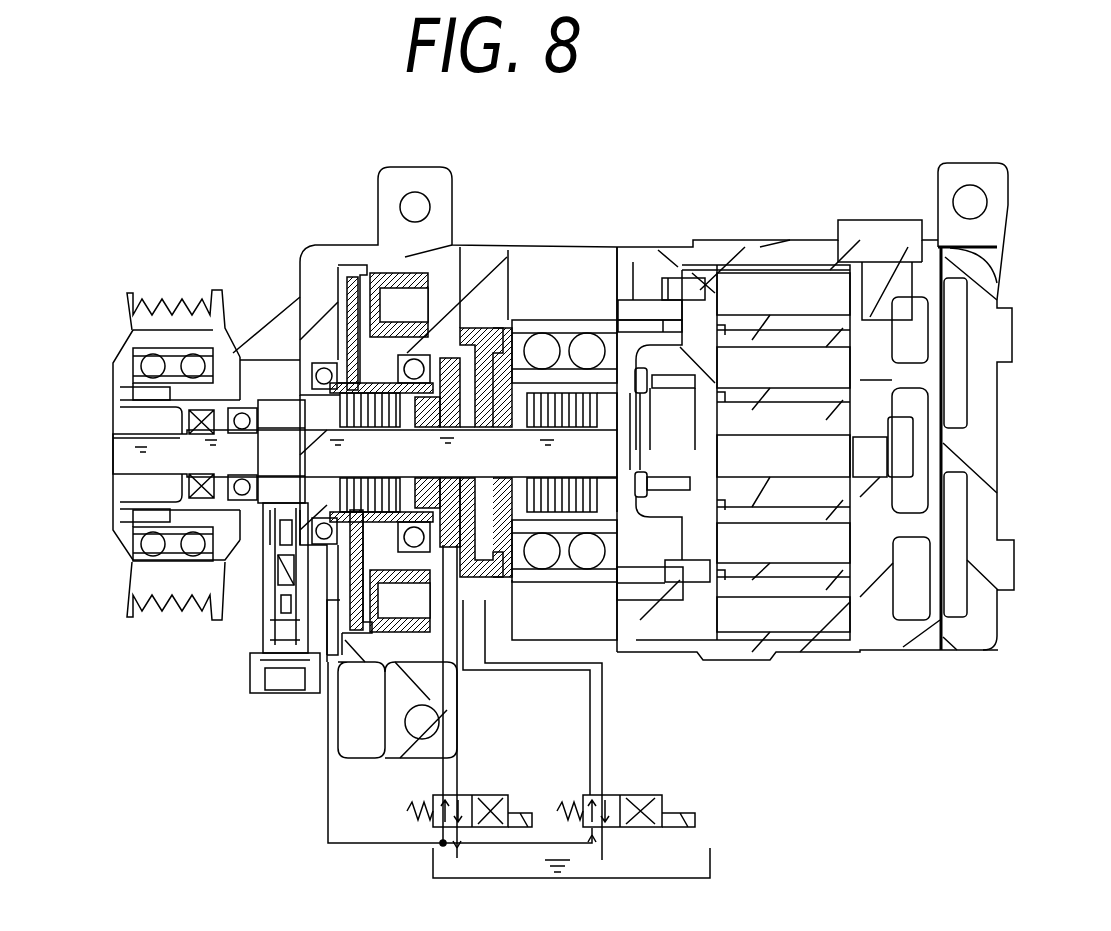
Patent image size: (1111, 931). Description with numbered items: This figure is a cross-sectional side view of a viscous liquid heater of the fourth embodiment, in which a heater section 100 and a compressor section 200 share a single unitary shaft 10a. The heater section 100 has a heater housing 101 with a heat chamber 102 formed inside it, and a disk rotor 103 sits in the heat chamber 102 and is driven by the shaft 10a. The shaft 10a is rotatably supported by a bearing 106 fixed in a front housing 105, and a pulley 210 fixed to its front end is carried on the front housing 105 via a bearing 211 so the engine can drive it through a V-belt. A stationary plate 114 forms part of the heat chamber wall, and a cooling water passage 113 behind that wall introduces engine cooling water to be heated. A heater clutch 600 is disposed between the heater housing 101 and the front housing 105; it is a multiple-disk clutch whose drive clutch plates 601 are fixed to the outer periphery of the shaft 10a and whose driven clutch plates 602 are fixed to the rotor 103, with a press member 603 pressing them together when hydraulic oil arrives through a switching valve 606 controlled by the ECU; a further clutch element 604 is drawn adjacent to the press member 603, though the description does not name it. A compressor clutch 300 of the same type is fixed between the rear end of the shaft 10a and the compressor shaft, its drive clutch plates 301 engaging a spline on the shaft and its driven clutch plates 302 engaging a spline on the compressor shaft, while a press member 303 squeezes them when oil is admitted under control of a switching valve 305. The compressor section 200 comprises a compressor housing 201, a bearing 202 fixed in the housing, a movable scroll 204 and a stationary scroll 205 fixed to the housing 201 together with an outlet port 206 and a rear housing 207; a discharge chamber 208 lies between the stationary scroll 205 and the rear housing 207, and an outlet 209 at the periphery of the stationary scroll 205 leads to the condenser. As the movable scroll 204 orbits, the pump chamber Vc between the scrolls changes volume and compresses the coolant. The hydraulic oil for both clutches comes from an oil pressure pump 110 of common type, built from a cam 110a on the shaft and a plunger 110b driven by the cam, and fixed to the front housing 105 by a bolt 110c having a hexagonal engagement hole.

The unitary shaft 10a is at (122, 456).
The front housing 105 is at (133, 323).
The pulley 210 is at (172, 347).
The bearing 211 is at (130, 554).
The bearing 106 is at (218, 562).
The drive clutch plates 601 is at (312, 365).
The heater section 100 is at (330, 241).
The heater housing 101 is at (341, 243).
The heat chamber 102 is at (355, 352).
The driven clutch plates 602 is at (338, 347).
The heater clutch 600 is at (350, 307).
The press member 603 is at (403, 358).
The clutch member 604 is at (465, 326).
The bearing 202 is at (558, 322).
The driven clutch plates 302 is at (578, 386).
The drive clutch plates 301 is at (556, 330).
The compressor clutch 300 is at (596, 390).
The compressor section 200 is at (748, 236).
The compressor housing 201 is at (627, 243).
The movable scroll 204 is at (698, 322).
The press member 303 is at (560, 612).
The stationary scroll 205 is at (810, 246).
The outlet 209 is at (884, 243).
The rear housing 207 is at (1000, 297).
The discharge chamber 208 is at (955, 405).
The outlet port 206 is at (792, 457).
The pump chamber Vc is at (870, 518).
The oil pressure pump 110 is at (250, 690).
The cam 110a is at (272, 478).
The plunger 110b is at (262, 555).
The bolt 110c is at (285, 695).
The disk rotor 103 is at (327, 693).
The stationary plate 114 is at (405, 620).
The cooling water passage 113 is at (497, 587).
The switching valve 606 is at (500, 795).
The switching valve 305 is at (660, 795).